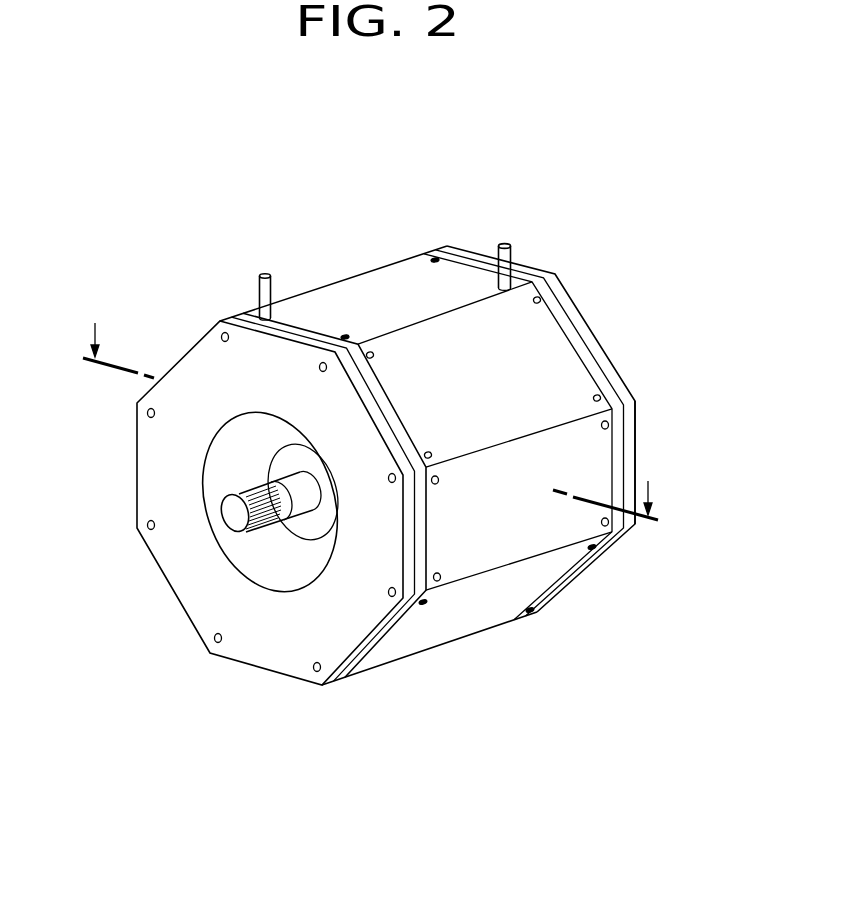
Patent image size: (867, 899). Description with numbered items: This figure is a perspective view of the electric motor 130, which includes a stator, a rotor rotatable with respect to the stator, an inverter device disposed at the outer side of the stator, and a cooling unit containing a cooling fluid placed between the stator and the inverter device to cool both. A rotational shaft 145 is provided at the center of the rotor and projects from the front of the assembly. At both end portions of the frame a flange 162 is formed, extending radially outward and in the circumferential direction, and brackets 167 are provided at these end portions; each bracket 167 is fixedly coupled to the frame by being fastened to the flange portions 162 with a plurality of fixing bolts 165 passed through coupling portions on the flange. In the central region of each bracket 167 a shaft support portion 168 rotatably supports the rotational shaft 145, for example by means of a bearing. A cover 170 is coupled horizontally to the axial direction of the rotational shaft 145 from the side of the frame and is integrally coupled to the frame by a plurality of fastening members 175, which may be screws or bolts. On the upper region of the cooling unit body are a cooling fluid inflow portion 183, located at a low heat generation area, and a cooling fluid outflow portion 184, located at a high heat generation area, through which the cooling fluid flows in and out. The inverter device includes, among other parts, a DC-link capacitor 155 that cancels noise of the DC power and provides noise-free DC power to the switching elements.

The electric motor 130 is at (142, 290).
The rotational shaft 145 is at (297, 503).
The DC-link capacitor 155 is at (487, 615).
The flange 162 is at (590, 357).
The fixing bolt 165 is at (140, 525).
The bracket 167 is at (582, 323).
The shaft support portion 168 is at (298, 528).
The cover 170 is at (397, 292).
The fastening member 175 is at (600, 397).
The cooling fluid inflow portion 183 is at (265, 284).
The cooling fluid outflow portion 184 is at (502, 256).